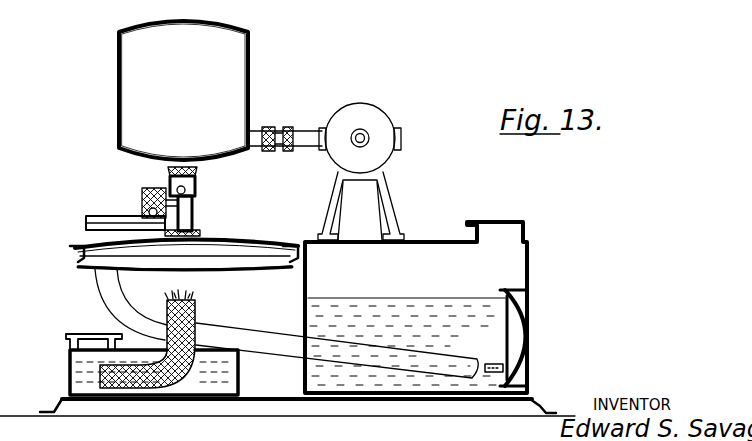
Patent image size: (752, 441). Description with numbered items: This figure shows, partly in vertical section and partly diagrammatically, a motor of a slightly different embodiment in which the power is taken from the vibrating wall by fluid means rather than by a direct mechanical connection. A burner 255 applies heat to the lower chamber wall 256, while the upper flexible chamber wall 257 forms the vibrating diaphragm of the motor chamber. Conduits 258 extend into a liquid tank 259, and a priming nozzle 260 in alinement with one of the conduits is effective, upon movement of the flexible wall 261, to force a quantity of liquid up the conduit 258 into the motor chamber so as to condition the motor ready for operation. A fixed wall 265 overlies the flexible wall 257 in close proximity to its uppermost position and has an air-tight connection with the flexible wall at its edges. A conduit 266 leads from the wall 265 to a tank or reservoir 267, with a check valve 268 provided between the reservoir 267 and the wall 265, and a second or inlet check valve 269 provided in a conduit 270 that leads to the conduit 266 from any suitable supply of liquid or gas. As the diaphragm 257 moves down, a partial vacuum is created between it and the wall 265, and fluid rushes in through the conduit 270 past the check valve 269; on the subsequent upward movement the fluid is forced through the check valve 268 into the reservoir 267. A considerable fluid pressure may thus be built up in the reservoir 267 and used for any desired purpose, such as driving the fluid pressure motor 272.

The burner 255 is at (197, 303).
The lower chamber wall 256 is at (243, 269).
The upper flexible chamber wall 257 is at (250, 243).
The conduit 258 is at (250, 346).
The liquid tank 259 is at (306, 320).
The priming nozzle 260 is at (489, 373).
The flexible wall 261 is at (539, 339).
The fixed wall 265 is at (205, 234).
The conduit 266 is at (193, 212).
The reservoir 267 is at (251, 69).
The check valve 268 is at (196, 192).
The inlet check valve 269 is at (140, 206).
The conduit 270 is at (90, 220).
The fluid pressure motor 272 is at (357, 107).